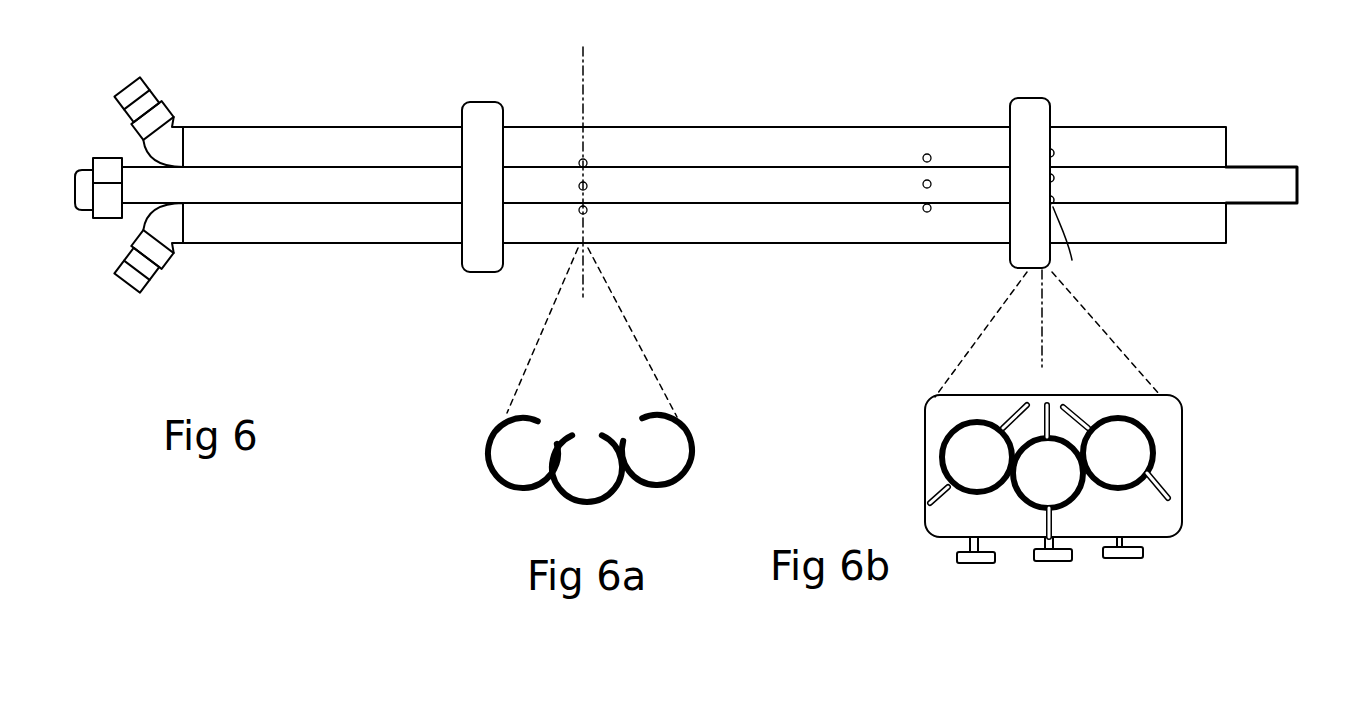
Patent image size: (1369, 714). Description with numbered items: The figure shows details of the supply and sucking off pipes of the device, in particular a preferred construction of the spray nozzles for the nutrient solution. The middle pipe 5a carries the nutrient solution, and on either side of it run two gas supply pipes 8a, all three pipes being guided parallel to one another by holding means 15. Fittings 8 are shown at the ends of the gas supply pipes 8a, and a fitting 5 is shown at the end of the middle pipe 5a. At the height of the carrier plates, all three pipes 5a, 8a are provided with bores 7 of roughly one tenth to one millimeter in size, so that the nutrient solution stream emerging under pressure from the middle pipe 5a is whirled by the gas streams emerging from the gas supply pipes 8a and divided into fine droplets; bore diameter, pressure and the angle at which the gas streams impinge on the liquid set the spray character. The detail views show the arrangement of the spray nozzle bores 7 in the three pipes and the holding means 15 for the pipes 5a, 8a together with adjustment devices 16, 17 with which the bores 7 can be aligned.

In FIG. 6, the rod end fitting 5 is at (90, 218).
In FIG. 6, the middle pipe 5a is at (1277, 162).
In FIG. 6A, the middle pipe 5a is at (587, 490).
In FIG. 6B, the middle pipe 5a is at (1060, 490).
In FIG. 6, the spray nozzle bores 7 is at (583, 159).
In FIG. 6A, the spray nozzle bores 7 is at (542, 400).
In FIG. 6, the tube end couplings 8 is at (165, 96).
In FIG. 6, the gas supply pipes 8a is at (1165, 142).
In FIG. 6A, the gas supply pipes 8a is at (517, 450).
In FIG. 6B, the gas supply pipes 8a is at (973, 453).
In FIG. 6, the holding means 15 is at (480, 102).
In FIG. 6, the adjustment devices 16 is at (1058, 153).
In FIG. 6B, the adjustment devices 16 is at (973, 565).
In FIG. 6B, the adjustment devices 17 is at (942, 532).